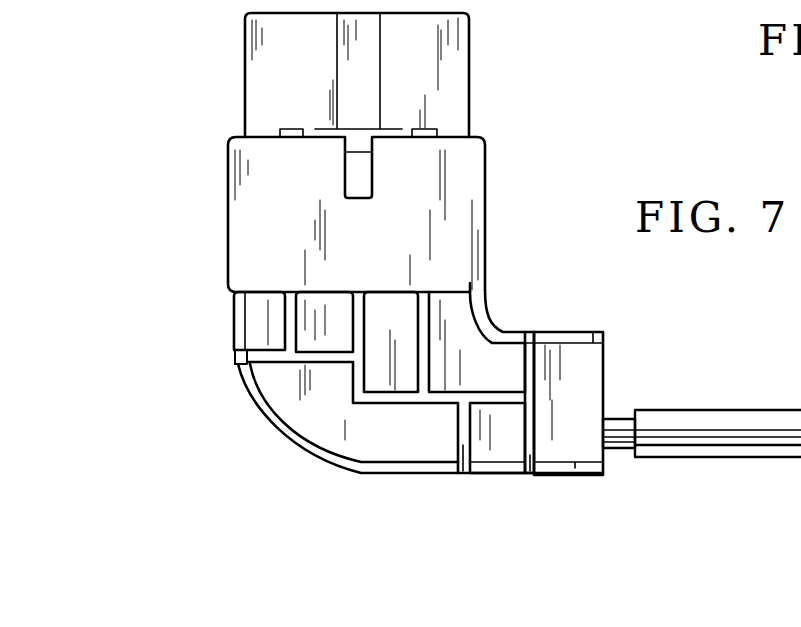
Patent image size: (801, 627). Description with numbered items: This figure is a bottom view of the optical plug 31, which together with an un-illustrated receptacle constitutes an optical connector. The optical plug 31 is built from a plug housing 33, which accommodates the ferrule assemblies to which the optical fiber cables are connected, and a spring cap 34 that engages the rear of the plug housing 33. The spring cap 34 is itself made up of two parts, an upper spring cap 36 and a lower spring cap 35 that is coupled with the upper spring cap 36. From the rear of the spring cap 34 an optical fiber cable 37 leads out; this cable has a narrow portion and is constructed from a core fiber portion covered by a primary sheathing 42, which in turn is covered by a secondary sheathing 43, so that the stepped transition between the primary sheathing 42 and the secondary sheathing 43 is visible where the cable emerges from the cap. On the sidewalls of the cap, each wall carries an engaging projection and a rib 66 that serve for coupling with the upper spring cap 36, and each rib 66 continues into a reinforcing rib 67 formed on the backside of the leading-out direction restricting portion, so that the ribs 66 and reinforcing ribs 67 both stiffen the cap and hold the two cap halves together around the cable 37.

The optical plug 31 is at (562, 130).
The plug housing 33 is at (470, 70).
The spring cap 34 is at (220, 262).
The lower spring cap 35 is at (485, 228).
The upper spring cap 36 is at (261, 420).
The optical fiber cable 37 is at (754, 425).
The primary sheathing 42 is at (618, 443).
The secondary sheathing 43 is at (694, 428).
The rib 66 is at (237, 357).
The reinforcing rib 67 is at (321, 362).